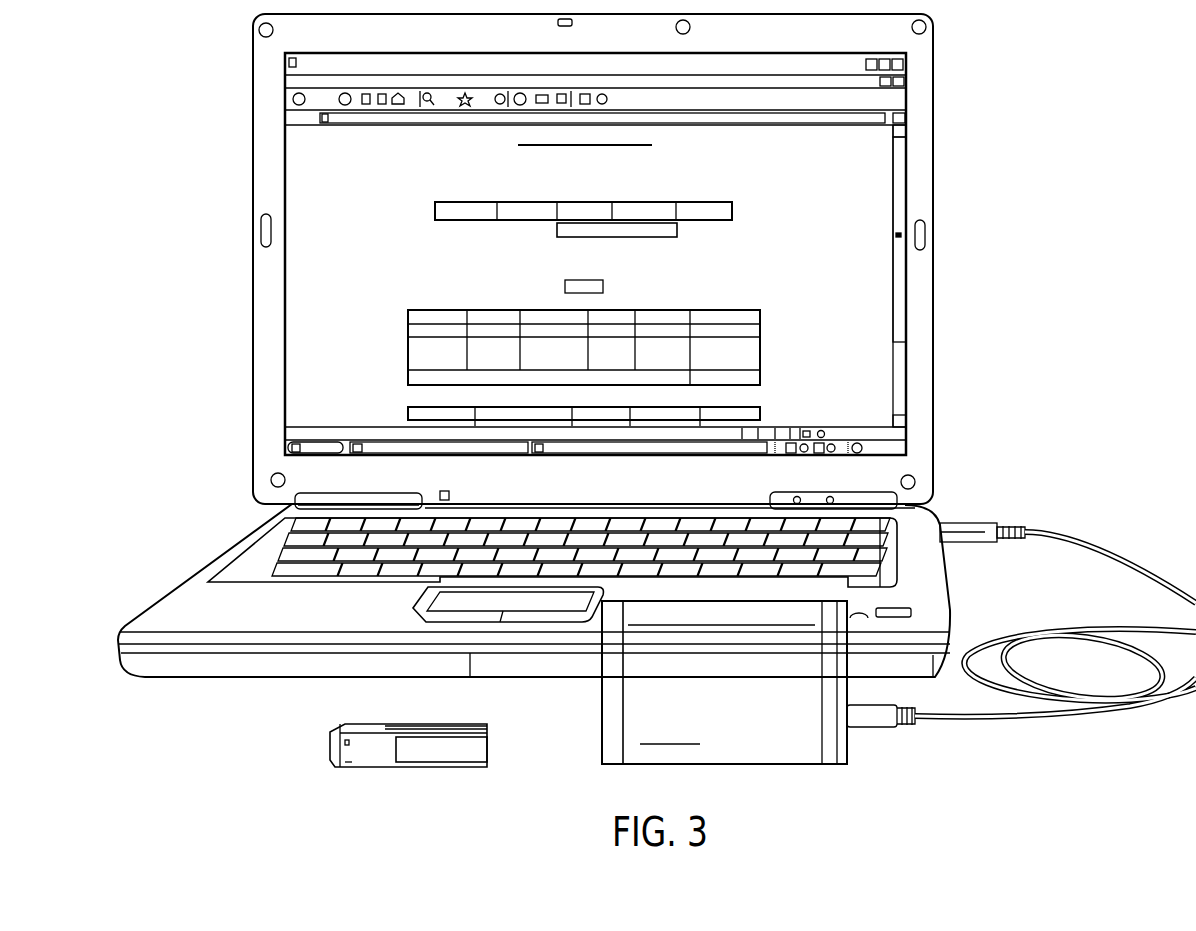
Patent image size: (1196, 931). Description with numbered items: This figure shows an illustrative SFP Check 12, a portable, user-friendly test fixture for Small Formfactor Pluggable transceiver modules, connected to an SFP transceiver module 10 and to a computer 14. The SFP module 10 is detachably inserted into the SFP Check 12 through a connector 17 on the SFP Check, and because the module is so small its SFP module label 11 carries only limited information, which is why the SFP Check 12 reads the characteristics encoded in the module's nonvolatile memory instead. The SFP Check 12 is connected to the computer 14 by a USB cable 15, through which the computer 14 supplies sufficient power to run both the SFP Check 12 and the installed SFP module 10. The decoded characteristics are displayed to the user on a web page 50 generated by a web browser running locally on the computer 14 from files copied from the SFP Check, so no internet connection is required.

The SFP transceiver module 10 is at (453, 767).
The SFP module label 11 is at (437, 748).
The SFP Check 12 is at (748, 742).
The computer 14 is at (937, 238).
The USB cable 15 is at (980, 523).
The connector 17 is at (600, 713).
The web page 50 is at (757, 264).